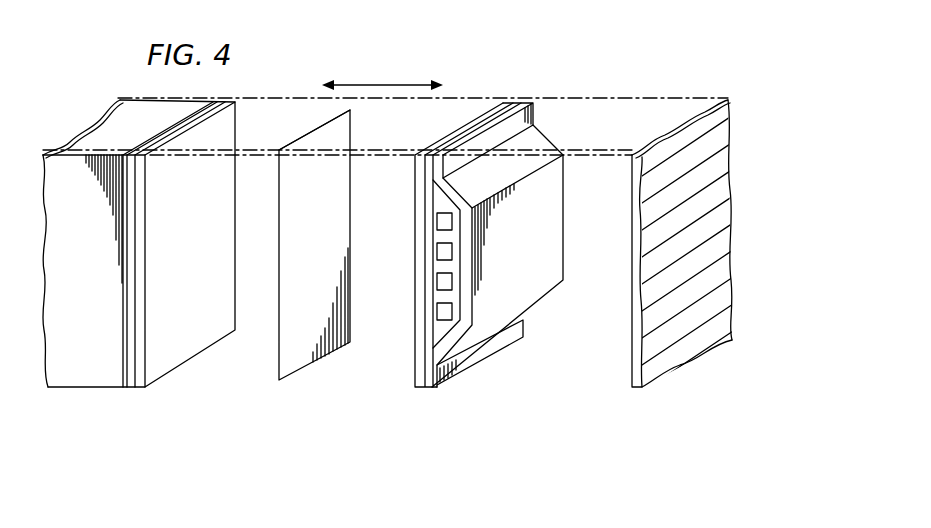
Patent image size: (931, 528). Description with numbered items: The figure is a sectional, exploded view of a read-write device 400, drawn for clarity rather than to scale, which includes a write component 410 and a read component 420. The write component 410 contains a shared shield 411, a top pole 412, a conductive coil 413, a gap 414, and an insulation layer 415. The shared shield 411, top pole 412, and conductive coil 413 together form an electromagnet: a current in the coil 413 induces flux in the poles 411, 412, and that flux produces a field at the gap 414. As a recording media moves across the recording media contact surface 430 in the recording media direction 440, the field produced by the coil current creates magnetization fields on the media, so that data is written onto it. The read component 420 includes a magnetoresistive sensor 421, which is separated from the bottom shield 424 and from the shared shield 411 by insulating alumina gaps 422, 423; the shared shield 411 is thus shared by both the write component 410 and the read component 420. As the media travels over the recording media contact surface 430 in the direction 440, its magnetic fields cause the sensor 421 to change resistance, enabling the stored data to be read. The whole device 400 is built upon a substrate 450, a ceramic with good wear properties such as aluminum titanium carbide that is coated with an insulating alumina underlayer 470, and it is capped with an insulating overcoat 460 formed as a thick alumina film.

The read-write device 400 is at (592, 67).
The write component 410 is at (467, 268).
The shared shield 411 is at (416, 389).
The top pole 412 is at (434, 389).
The conductive coil 413 is at (442, 214).
The gap 414 is at (516, 106).
The insulation layer 415 is at (433, 330).
The read component 420 is at (212, 291).
The sensor 421 is at (351, 144).
The insulating alumina gap 422 is at (227, 372).
The insulating alumina gap 423 is at (352, 372).
The bottom shield 424 is at (143, 389).
The recording media contact surface 430 is at (678, 104).
The recording media direction 440 is at (382, 83).
The substrate 450 is at (72, 384).
The insulating overcoat 460 is at (561, 355).
The insulating alumina underlayer 470 is at (128, 389).